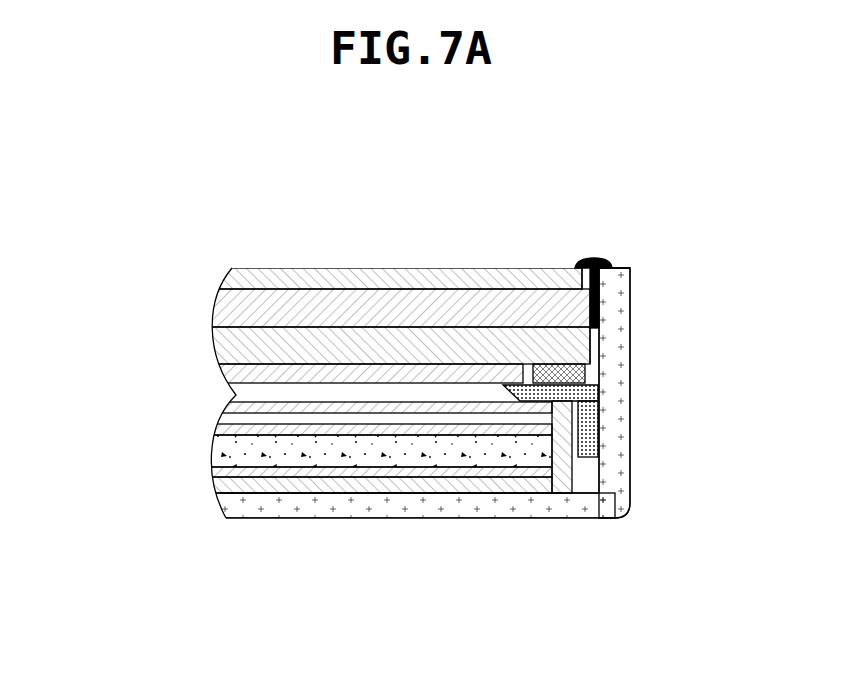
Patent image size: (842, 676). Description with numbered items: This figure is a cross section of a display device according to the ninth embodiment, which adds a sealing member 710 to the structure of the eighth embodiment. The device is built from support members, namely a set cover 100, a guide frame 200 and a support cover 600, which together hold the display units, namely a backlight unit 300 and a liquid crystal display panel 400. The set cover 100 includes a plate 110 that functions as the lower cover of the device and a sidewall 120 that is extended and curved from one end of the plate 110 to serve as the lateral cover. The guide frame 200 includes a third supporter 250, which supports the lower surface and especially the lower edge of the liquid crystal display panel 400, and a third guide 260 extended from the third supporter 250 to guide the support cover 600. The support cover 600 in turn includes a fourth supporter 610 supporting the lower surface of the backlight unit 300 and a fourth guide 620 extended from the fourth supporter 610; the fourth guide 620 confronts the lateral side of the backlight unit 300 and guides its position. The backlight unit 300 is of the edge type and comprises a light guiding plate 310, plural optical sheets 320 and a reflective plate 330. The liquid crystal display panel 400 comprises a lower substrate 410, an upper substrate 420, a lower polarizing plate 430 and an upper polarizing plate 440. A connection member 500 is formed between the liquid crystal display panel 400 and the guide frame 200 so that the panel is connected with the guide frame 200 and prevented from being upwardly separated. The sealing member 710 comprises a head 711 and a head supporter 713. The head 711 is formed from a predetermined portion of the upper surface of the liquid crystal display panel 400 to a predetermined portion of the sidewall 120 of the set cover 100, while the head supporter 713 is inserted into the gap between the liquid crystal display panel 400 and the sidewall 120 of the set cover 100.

The set cover 100 is at (486, 402).
The plate 110 is at (567, 518).
The sidewall 120 is at (620, 470).
The guide frame 200 is at (638, 418).
The third supporter 250 is at (568, 395).
The third guide 260 is at (590, 437).
The backlight unit 300 is at (294, 443).
The light guiding plate 310 is at (232, 447).
The optical sheets 320 is at (237, 405).
The reflective plate 330 is at (232, 473).
The liquid crystal display panel 400 is at (313, 327).
The lower substrate 410 is at (223, 346).
The upper substrate 420 is at (225, 313).
The lower polarizing plate 430 is at (235, 380).
The upper polarizing plate 440 is at (231, 281).
The connection member 500 is at (568, 377).
The support cover 600 is at (388, 506).
The fourth supporter 610 is at (483, 483).
The fourth guide 620 is at (563, 450).
The sealing member 710 is at (621, 243).
The head 711 is at (593, 258).
The head supporter 713 is at (600, 200).